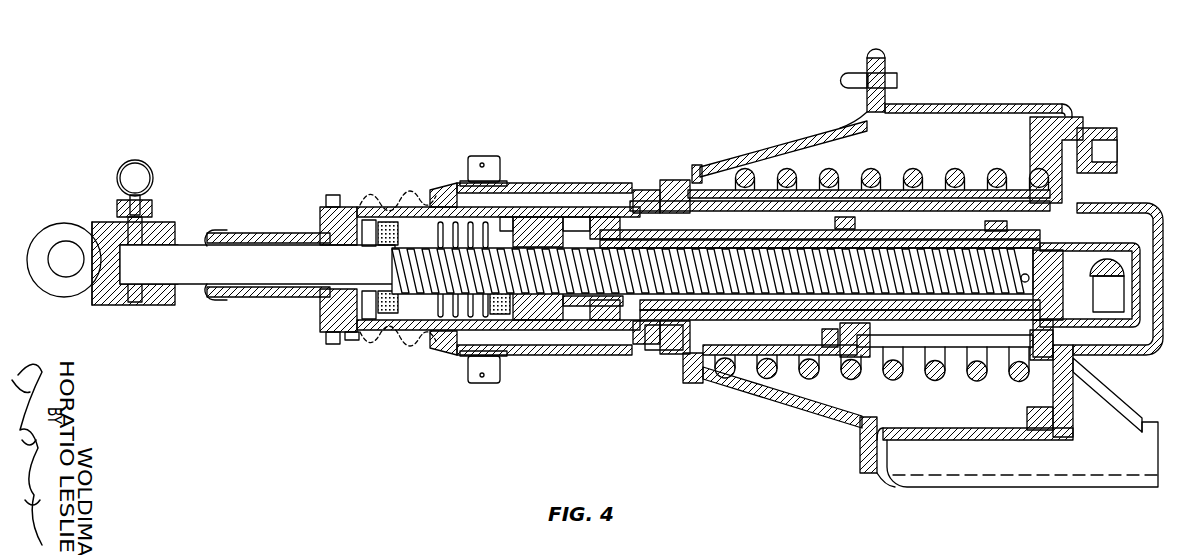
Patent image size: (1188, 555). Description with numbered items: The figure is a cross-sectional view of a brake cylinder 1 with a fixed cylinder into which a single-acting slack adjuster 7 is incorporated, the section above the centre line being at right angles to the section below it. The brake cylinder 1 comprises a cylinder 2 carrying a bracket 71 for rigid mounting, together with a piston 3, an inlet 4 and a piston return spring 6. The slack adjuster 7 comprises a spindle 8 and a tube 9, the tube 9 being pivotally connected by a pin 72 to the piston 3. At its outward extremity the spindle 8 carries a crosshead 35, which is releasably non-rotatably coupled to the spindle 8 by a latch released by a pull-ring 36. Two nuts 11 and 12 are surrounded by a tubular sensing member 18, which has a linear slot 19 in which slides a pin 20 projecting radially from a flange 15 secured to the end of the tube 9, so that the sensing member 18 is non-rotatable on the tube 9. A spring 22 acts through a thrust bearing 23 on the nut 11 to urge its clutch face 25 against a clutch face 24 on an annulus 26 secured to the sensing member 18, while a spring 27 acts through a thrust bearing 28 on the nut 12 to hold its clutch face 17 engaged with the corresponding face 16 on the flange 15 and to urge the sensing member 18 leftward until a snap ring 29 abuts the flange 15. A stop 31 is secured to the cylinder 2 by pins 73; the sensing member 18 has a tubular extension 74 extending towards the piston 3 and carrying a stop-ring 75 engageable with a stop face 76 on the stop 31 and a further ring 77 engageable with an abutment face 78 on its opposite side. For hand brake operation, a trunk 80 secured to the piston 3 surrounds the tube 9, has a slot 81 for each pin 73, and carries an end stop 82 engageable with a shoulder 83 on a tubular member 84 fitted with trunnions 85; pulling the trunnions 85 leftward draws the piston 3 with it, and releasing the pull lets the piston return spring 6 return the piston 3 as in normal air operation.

The brake cylinder 1 is at (1007, 103).
The cylinder 2 is at (947, 105).
The piston 3 is at (1070, 127).
The inlet 4 is at (1115, 152).
The piston return spring 6 is at (746, 168).
The slack adjuster 7 is at (450, 184).
The spindle 8 is at (300, 286).
The tube 9 is at (797, 232).
The nut 11 is at (397, 327).
The nut 12 is at (522, 330).
The flange 15 is at (578, 323).
The clutch face 16 is at (507, 217).
The clutch face 17 is at (514, 216).
The sensing member 18 is at (365, 198).
The linear slot 19 is at (568, 219).
The pin 20 is at (537, 217).
The spring 22 is at (360, 331).
The thrust bearing 23 is at (383, 320).
The clutch face 24 is at (403, 217).
The clutch face 25 is at (409, 327).
The annulus 26 is at (420, 197).
The spring 27 is at (440, 320).
The thrust bearing 28 is at (497, 320).
The snap ring 29 is at (622, 322).
The stop 31 is at (886, 228).
The crosshead 35 is at (62, 226).
The pull-ring 36 is at (154, 178).
The bracket 71 is at (1060, 470).
The pin 72 is at (1117, 260).
The pin 73 is at (876, 357).
The tubular extension 74 is at (686, 357).
The stop-ring 75 is at (990, 222).
The stop face 76 is at (906, 347).
The further ring 77 is at (845, 217).
The abutment face 78 is at (840, 350).
The trunk 80 is at (728, 375).
The slot 81 is at (955, 347).
The end stop 82 is at (648, 179).
The shoulder 83 is at (663, 181).
The tubular member 84 is at (620, 183).
The trunnions 85 is at (479, 161).